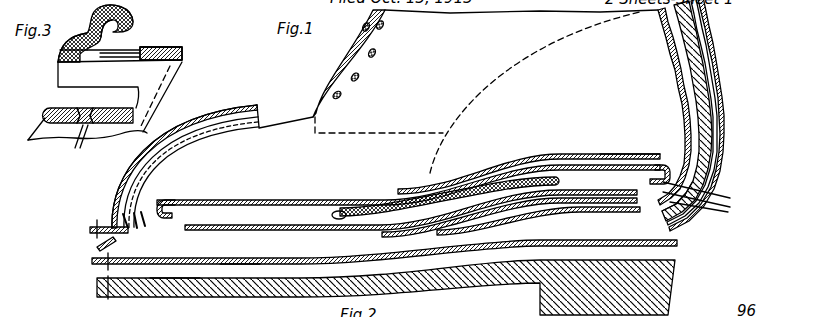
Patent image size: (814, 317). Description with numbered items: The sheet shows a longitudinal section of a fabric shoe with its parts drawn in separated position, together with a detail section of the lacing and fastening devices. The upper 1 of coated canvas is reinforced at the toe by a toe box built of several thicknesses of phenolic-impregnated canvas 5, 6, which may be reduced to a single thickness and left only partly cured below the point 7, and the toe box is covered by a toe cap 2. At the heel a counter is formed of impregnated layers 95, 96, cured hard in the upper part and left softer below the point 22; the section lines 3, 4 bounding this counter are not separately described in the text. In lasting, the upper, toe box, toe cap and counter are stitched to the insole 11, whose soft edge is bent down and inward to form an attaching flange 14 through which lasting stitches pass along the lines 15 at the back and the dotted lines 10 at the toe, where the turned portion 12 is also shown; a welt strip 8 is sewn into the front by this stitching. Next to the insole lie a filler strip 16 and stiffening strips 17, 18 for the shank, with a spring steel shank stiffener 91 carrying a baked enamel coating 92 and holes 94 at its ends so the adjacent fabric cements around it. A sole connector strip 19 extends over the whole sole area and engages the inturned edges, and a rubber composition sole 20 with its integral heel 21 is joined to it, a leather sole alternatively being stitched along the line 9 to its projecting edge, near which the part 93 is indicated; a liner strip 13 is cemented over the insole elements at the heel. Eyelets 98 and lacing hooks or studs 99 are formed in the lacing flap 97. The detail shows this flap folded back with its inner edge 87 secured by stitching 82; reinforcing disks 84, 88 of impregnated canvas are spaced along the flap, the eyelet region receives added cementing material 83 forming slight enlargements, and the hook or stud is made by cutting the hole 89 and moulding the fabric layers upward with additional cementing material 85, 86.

In FIG. 1, the upper 1 is at (233, 138).
In FIG. 1, the toe cap 2 is at (110, 198).
In FIG. 1, the heel counter inner layer 3 is at (668, 62).
In FIG. 1, the heel counter outer layer 4 is at (714, 67).
In FIG. 1, the impregnated canvas thickness 5 is at (152, 167).
In FIG. 1, the impregnated canvas thickness 6 is at (165, 178).
In FIG. 1, the point 7 is at (143, 197).
In FIG. 1, the welt strip 8 is at (92, 230).
In FIG. 1, the stitching line 9 is at (97, 243).
In FIG. 1, the dotted lines 10 is at (164, 216).
In FIG. 1, the insole 11 is at (318, 201).
In FIG. 1, the lasting margin 12 is at (158, 213).
In FIG. 1, the liner strip 13 is at (638, 153).
In FIG. 1, the attaching flange 14 is at (650, 178).
In FIG. 1, the stitching lines 15 is at (707, 203).
In FIG. 1, the filler strip 16 is at (360, 226).
In FIG. 1, the stiffening strip 17 is at (390, 233).
In FIG. 1, the stiffening strip 18 is at (517, 213).
In FIG. 1, the sole connector strip 19 is at (290, 258).
In FIG. 1, the rubber composition sole 20 is at (176, 292).
In FIG. 1, the integral heel 21 is at (677, 292).
In FIG. 1, the point 22 is at (707, 157).
In FIG. 3, the stitching 82 is at (167, 80).
In FIG. 3, the phenolic condensation cementing material 83 is at (77, 144).
In FIG. 3, the strengthening disk 84 is at (45, 115).
In FIG. 3, the moulding cementing material 85 is at (112, 32).
In FIG. 3, the moulding cementing material 86 is at (66, 41).
In FIG. 3, the inner edge 87 is at (182, 62).
In FIG. 3, the reinforcing disk 88 is at (125, 22).
In FIG. 3, the hole 89 is at (118, 58).
In FIG. 1, the shank stiffener 91 is at (395, 189).
In FIG. 1, the coating 92 is at (332, 215).
In FIG. 1, the midsole stitching 93 is at (237, 265).
In FIG. 1, the holes 94 is at (365, 209).
In FIG. 1, the counter layer 95 is at (717, 89).
In FIG. 1, the counter layer 96 is at (707, 100).
In FIG. 3, the lacing flap 97 is at (182, 48).
In FIG. 1, the lacing flap 97 is at (322, 100).
In FIG. 3, the eyelets 98 is at (82, 105).
In FIG. 1, the eyelets 98 is at (380, 54).
In FIG. 3, the lacing hook or stud 99 is at (130, 13).
In FIG. 1, the lacing hook or stud 99 is at (362, 32).